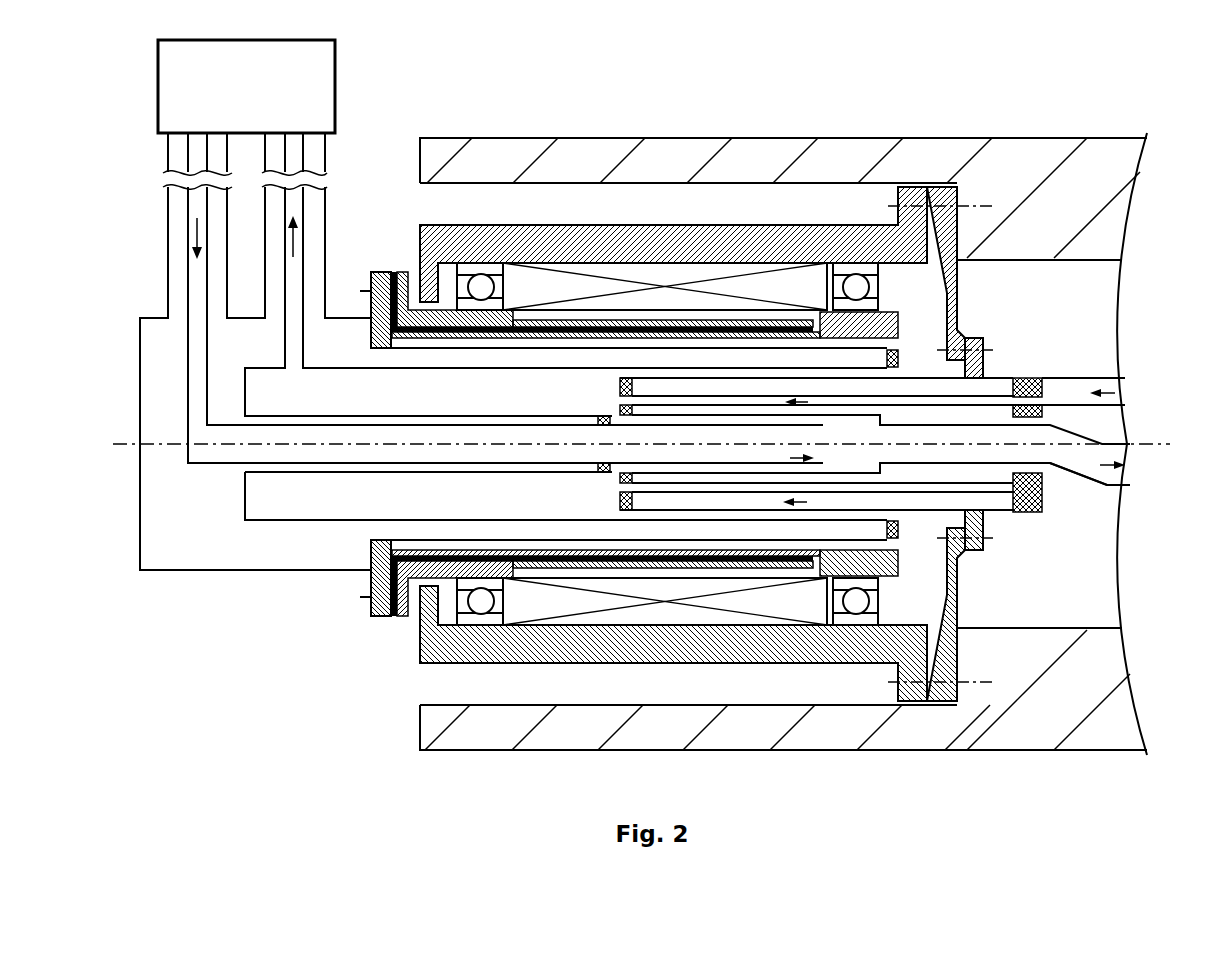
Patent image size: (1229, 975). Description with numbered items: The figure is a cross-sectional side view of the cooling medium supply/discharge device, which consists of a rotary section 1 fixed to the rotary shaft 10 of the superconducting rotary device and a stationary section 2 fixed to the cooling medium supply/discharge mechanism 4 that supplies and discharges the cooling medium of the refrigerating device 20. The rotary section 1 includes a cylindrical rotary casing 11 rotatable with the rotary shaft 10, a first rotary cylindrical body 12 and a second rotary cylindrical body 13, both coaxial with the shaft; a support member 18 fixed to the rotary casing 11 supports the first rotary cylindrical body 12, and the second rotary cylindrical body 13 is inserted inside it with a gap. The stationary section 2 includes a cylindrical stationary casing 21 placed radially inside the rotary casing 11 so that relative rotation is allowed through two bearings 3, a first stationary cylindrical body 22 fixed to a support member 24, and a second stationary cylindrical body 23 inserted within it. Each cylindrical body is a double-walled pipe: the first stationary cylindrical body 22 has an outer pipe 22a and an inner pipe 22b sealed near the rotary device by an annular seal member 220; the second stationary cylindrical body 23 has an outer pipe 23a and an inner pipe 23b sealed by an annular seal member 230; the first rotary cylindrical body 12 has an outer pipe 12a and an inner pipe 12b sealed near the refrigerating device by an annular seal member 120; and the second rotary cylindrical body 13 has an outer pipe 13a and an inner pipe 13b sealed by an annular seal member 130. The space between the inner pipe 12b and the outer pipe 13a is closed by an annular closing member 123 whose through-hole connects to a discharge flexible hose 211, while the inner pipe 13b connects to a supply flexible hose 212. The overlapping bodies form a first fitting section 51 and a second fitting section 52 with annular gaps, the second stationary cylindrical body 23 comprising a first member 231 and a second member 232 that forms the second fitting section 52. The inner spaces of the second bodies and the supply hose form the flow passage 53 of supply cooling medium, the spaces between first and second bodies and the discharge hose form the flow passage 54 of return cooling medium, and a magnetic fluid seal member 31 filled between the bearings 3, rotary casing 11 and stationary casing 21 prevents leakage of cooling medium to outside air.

The rotary section 1 is at (866, 73).
The stationary section 2 is at (228, 602).
The bearing 3 is at (483, 283).
The cooling medium supply/discharge mechanism 4 is at (136, 336).
The rotary shaft 10 is at (1018, 163).
The rotary casing 11 is at (447, 243).
The first rotary cylindrical body 12 is at (695, 390).
The outer pipe 12a is at (675, 513).
The inner pipe 12b is at (648, 502).
The second rotary cylindrical body 13 is at (747, 417).
The outer pipe 13a is at (768, 472).
The inner pipe 13b is at (850, 472).
The support member 18 is at (938, 182).
The refrigerating device 20 is at (337, 98).
The stationary casing 21 is at (512, 305).
The first stationary cylindrical body 22 is at (440, 357).
The outer pipe 22a is at (403, 350).
The inner pipe 22b is at (368, 368).
The second stationary cylindrical body 23 is at (438, 416).
The outer pipe 23a is at (395, 416).
The inner pipe 23b is at (375, 427).
The support member 24 is at (378, 272).
The magnetic fluid seal member 31 is at (648, 275).
The first fitting section 51 is at (612, 372).
The second fitting section 52 is at (612, 478).
The flow passage of the supply cooling medium 53 is at (287, 460).
The flow passage of the return cooling medium 54 is at (287, 408).
The annular seal member 120 is at (618, 386).
The annular closing member 123 is at (1030, 513).
The annular seal member 130 is at (615, 418).
The discharge flexible hose 211 is at (1072, 392).
The supply flexible hose 212 is at (1073, 457).
The annular seal member 220 is at (900, 358).
The annular seal member 230 is at (598, 458).
The first member 231 is at (487, 435).
The second member 232 is at (707, 435).